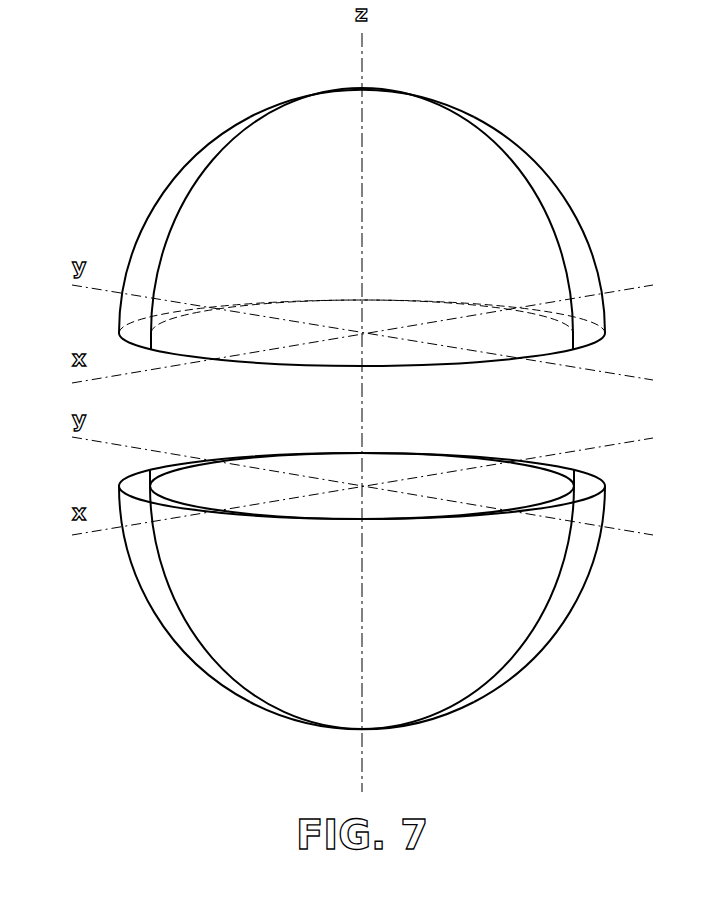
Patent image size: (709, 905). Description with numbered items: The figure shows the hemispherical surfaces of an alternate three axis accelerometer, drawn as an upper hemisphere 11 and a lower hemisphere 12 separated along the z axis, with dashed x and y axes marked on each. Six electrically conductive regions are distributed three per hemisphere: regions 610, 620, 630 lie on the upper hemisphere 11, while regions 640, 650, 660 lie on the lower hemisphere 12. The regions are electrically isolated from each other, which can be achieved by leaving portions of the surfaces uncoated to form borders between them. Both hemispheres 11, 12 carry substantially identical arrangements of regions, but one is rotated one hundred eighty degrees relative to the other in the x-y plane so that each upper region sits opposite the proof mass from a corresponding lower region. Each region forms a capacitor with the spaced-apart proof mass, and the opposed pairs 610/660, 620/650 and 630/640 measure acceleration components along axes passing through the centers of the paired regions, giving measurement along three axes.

The upper hemispherical surface 11 is at (372, 197).
The lower hemispherical surface 12 is at (372, 626).
The electrically conductive region 610 is at (400, 122).
The electrically conductive region 620 is at (162, 195).
The electrically conductive region 630 is at (582, 225).
The electrically conductive region 640 is at (172, 642).
The electrically conductive region 650 is at (570, 612).
The electrically conductive region 660 is at (390, 715).